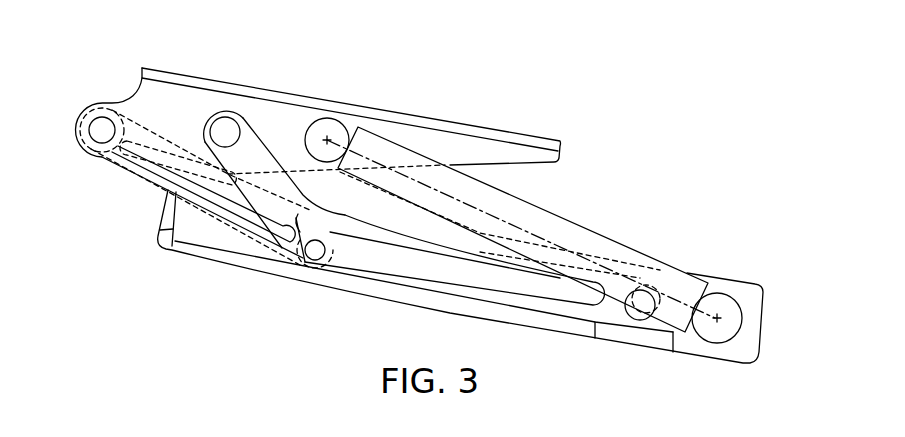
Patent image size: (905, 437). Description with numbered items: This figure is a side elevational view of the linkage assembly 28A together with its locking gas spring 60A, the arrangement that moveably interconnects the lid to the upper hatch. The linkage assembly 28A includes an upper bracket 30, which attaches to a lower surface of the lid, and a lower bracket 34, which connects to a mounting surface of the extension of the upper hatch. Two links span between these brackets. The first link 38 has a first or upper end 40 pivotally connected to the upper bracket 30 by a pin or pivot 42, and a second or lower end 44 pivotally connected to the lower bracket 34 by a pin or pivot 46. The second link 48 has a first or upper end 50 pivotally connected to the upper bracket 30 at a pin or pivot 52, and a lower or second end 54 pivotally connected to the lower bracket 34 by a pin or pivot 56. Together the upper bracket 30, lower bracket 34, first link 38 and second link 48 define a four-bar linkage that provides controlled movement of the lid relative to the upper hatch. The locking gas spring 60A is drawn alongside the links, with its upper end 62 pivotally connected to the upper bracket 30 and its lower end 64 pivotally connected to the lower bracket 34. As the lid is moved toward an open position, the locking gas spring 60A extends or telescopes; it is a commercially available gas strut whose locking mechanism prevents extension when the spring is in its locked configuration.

The upper bracket 30 is at (467, 122).
The first link 38 is at (142, 177).
The first or upper end 40 is at (82, 143).
The pin or pivot 42 is at (95, 120).
The pin or pivot 52 is at (220, 123).
The first or upper end 50 is at (247, 118).
The upper end 62 is at (332, 118).
The locking gas spring 60A is at (604, 235).
The linkage assembly 28A is at (583, 181).
The second link 48 is at (312, 194).
The second or lower end 44 is at (307, 268).
The pin or pivot 46 is at (317, 267).
The lower bracket 34 is at (523, 324).
The lower end 64 is at (733, 293).
The lower or second end 54 is at (638, 318).
The pin or pivot 56 is at (640, 317).